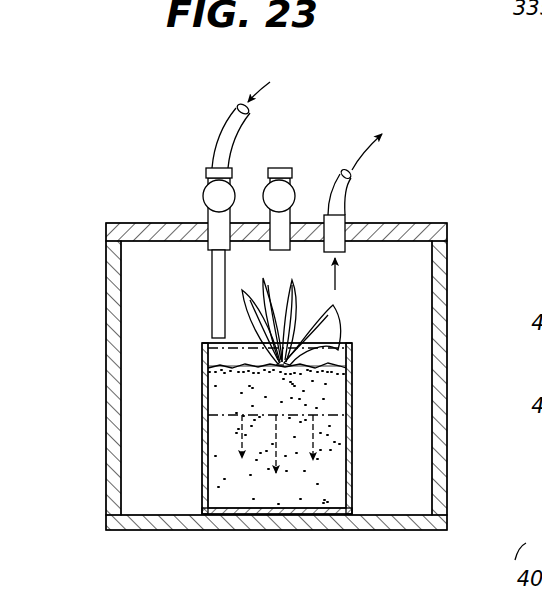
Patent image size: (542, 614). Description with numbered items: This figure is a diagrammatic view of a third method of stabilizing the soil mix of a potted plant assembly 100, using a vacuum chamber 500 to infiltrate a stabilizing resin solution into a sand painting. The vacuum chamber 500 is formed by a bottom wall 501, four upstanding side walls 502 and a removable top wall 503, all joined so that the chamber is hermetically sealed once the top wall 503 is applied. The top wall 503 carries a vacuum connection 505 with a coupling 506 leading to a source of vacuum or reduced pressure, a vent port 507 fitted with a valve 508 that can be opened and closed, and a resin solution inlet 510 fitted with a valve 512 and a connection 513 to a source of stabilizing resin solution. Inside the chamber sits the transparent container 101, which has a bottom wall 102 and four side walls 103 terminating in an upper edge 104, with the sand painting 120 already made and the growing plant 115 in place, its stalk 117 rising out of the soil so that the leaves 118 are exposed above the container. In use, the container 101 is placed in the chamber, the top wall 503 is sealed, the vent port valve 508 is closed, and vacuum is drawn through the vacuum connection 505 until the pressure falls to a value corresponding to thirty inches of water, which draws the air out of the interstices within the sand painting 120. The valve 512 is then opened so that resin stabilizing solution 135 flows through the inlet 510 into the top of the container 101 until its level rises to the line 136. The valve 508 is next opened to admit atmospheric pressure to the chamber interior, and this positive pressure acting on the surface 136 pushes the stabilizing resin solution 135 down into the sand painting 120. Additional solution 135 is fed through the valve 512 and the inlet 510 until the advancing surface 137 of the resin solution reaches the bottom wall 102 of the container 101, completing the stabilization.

The vacuum chamber 500 is at (273, 385).
The bottom wall 501 is at (178, 530).
The side walls 502 is at (106, 440).
The removable top wall 503 is at (120, 224).
The vacuum connection 505 is at (346, 218).
The coupling 506 is at (352, 178).
The vent port 507 is at (299, 218).
The vent port valve 508 is at (278, 170).
The resin solution inlet 510 is at (212, 272).
The inlet valve 512 is at (203, 188).
The resin connection 513 is at (224, 120).
The potted plant assembly 100 is at (270, 440).
The container 101 is at (200, 410).
The bottom wall 102 is at (288, 514).
The side walls 103 is at (203, 452).
The upper edge 104 is at (206, 343).
The growing plant 115 is at (319, 307).
The stalk 117 is at (305, 360).
The leaves 118 is at (261, 280).
The sand painting 120 is at (228, 446).
The resin stabilizing solution 135 is at (340, 358).
The line or surface 136 is at (332, 349).
The advancing surface 137 is at (328, 427).